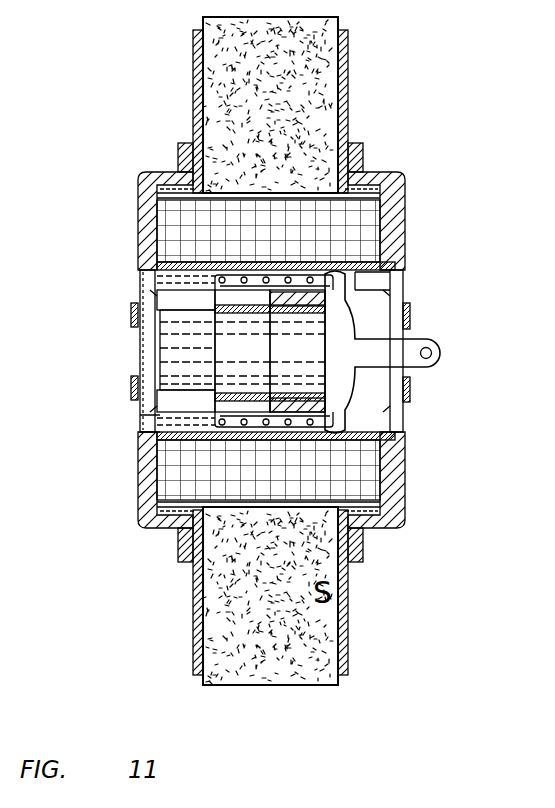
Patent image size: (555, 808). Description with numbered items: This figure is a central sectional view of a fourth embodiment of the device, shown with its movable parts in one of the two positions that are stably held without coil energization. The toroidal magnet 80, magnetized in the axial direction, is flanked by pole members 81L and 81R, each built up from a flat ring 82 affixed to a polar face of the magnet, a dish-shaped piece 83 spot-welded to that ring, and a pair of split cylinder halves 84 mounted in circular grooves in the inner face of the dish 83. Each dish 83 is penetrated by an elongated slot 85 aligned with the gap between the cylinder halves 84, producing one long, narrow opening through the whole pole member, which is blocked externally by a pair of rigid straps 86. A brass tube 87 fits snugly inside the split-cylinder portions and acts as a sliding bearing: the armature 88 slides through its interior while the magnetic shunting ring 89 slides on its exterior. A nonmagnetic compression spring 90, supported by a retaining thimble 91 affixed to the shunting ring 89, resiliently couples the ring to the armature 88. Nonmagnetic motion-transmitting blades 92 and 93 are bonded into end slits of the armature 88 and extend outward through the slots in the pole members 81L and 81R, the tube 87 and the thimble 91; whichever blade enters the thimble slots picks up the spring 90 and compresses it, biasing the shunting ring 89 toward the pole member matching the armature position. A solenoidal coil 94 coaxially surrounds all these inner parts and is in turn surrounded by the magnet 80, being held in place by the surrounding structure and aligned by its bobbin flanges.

The magnet 80 is at (310, 88).
The left pole member 81L is at (126, 484).
The right pole member 81R is at (416, 218).
The flat rings 82 is at (196, 80).
The dish-shaped pieces 83 is at (146, 230).
The split cylinder halves 84 is at (185, 298).
The elongated slots 85 is at (405, 293).
The rigid straps 86 is at (411, 314).
The tube 87 is at (150, 296).
The armature 88 is at (255, 348).
The shunting ring 89 is at (296, 298).
The compression spring 90 is at (276, 235).
The retaining thimble 91 is at (393, 270).
The motion-transmitting blade 92 is at (146, 364).
The motion-transmitting blade 93 is at (362, 365).
The coil 94 is at (283, 481).